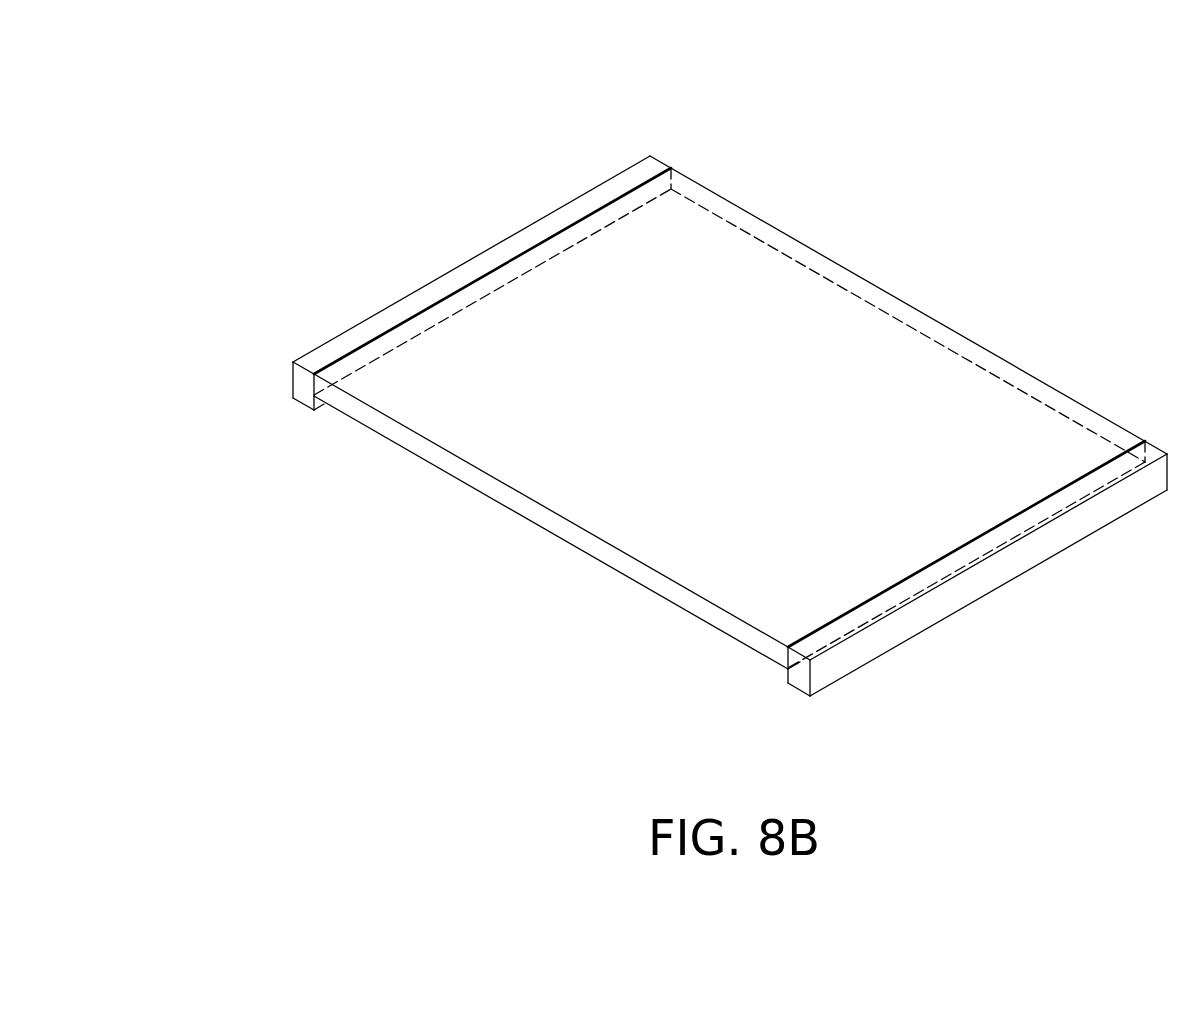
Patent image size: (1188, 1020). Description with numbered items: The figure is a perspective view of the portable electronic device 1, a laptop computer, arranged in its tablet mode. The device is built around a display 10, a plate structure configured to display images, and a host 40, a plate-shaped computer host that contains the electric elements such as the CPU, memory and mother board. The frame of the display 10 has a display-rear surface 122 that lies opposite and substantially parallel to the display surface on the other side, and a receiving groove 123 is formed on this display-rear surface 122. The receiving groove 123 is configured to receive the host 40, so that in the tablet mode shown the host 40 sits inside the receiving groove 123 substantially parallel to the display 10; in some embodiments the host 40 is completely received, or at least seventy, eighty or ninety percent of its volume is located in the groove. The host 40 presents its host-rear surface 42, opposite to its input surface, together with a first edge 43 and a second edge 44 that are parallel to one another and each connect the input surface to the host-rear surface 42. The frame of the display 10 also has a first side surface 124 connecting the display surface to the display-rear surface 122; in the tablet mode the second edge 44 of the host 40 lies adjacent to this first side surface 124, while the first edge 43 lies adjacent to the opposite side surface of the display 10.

The portable electronic device 1 is at (256, 98).
The display 10 is at (476, 256).
The host 40 is at (697, 615).
The host-rear surface 42 is at (495, 452).
The first edge 43 is at (912, 318).
The second edge 44 is at (612, 565).
The display-rear surface 122 is at (1023, 528).
The receiving groove 123 is at (940, 561).
The first side surface 124 is at (302, 384).